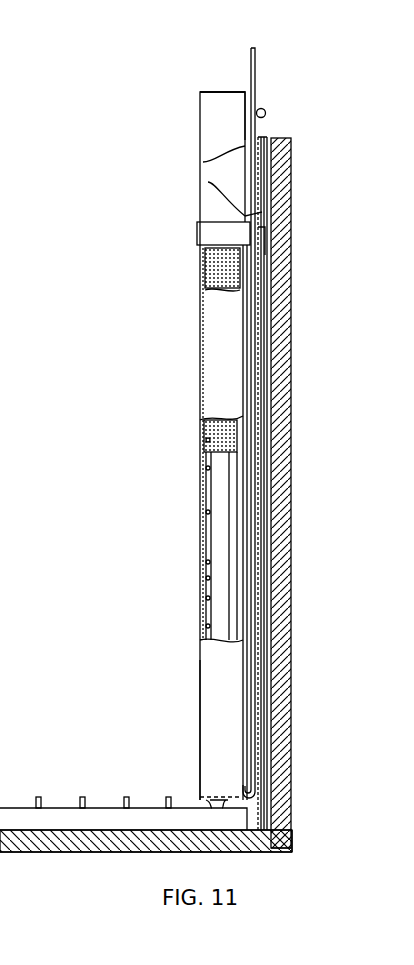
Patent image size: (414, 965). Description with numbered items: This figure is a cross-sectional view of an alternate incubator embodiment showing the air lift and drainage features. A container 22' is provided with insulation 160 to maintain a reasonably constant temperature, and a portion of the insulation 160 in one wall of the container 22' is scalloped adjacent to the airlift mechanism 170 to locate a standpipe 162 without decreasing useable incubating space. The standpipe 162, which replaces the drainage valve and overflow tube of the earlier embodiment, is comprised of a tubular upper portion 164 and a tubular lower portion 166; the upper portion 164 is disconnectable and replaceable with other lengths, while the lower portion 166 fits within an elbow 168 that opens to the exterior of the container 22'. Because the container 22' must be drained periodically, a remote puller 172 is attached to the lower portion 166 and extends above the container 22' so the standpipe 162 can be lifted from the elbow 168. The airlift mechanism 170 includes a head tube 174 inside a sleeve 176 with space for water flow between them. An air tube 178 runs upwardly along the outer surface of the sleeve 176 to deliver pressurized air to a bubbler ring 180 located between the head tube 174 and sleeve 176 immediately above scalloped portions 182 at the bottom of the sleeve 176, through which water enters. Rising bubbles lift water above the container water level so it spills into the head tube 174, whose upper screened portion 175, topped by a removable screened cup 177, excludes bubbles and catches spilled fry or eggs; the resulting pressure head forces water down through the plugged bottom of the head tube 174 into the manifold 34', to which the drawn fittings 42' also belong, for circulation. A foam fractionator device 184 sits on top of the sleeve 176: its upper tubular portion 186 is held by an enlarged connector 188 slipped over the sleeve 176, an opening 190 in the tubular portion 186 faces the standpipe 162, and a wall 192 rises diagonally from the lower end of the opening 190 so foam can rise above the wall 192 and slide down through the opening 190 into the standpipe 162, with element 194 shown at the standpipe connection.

The container 22' is at (305, 493).
The manifold 34' is at (27, 783).
The fastener 42' is at (120, 783).
The insulation 160 is at (106, 840).
The standpipe 162 is at (264, 389).
The upper portion 164 is at (263, 426).
The lower portion 166 is at (263, 695).
The elbow 168 is at (284, 847).
The airlift mechanism 170 is at (192, 367).
The remote puller 172 is at (266, 113).
The head tube 174 is at (207, 500).
The upper screened portion 175 is at (207, 439).
The sleeve 176 is at (200, 675).
The removable screened cup 177 is at (205, 263).
The tube 178 is at (256, 64).
The bubbler ring 180 is at (200, 797).
The scalloped portions 182 is at (249, 788).
The foam fractionator device 184 is at (190, 146).
The upper tubular portion 186 is at (200, 92).
The connector 188 is at (197, 229).
The opening 190 is at (245, 216).
The wall 192 is at (206, 180).
The bar 194 is at (245, 224).